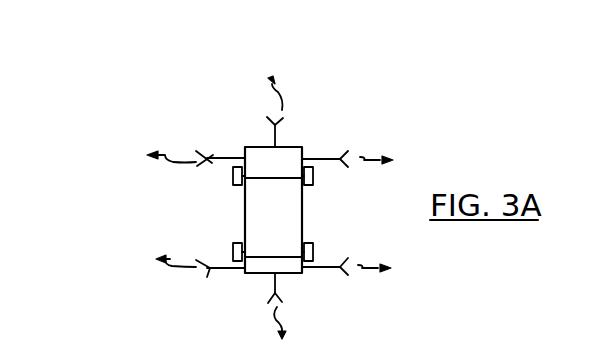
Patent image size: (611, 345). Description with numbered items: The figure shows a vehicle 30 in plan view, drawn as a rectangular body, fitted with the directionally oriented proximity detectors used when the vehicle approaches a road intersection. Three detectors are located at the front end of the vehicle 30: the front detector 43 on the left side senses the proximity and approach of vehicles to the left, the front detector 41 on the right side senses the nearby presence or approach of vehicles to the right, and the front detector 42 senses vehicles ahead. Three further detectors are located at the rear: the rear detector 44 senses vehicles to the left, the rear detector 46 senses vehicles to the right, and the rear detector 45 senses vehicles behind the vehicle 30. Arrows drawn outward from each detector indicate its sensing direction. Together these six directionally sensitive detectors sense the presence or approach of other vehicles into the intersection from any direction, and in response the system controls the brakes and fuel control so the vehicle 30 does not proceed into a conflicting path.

The vehicle 30 is at (290, 210).
The front detector 41 is at (343, 152).
The front detector 42 is at (283, 122).
The front detector 43 is at (196, 146).
The rear detector 44 is at (207, 277).
The rear detector 45 is at (281, 298).
The rear detector 46 is at (342, 261).